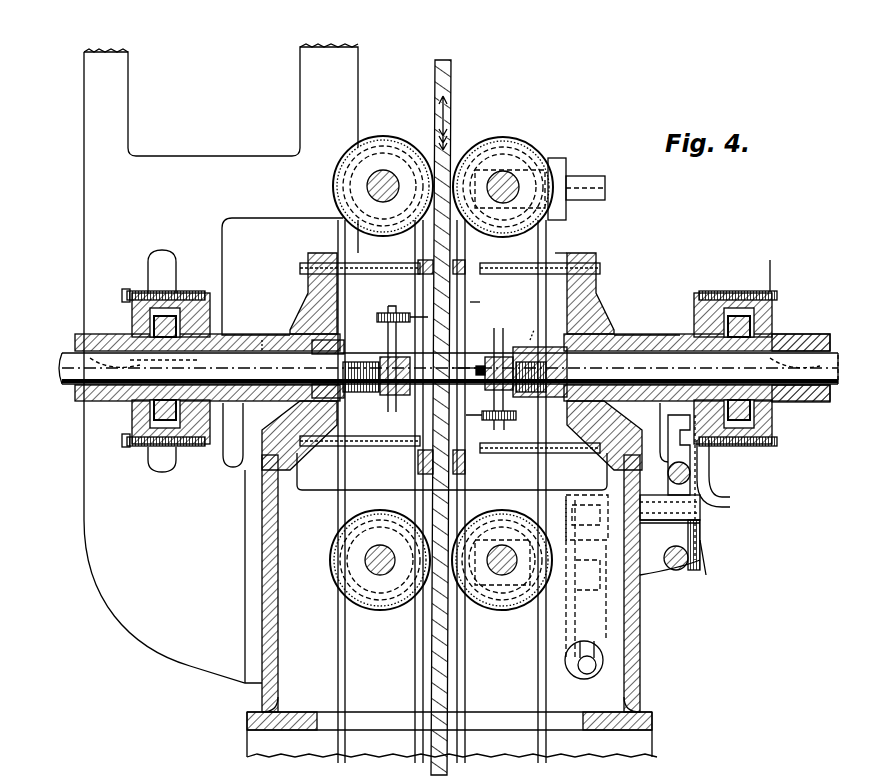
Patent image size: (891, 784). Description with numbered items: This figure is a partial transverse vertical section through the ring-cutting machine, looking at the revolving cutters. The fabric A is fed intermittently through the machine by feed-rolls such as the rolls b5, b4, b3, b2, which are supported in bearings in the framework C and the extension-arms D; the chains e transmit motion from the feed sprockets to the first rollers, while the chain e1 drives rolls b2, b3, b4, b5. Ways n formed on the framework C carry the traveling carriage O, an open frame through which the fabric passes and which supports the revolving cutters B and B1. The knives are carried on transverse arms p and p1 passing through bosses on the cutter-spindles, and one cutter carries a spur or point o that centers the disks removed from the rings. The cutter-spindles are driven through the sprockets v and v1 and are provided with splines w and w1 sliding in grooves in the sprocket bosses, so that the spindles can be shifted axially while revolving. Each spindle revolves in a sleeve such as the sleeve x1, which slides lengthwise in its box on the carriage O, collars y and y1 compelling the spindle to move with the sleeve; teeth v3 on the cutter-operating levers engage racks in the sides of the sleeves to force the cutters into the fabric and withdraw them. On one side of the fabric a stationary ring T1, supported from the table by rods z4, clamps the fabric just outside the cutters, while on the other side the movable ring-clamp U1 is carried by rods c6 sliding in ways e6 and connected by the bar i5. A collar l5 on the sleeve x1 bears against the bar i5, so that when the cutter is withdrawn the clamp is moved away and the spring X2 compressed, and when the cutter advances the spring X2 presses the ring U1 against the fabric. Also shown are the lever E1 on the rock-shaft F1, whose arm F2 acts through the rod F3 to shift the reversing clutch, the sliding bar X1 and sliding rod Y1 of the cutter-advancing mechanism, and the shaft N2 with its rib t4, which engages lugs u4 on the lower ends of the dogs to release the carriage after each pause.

The fabric A is at (453, 78).
The extension-arm D is at (221, 363).
The framework C is at (447, 605).
The fabric-feeding roll b5 is at (393, 132).
The fabric-feeding roll b4 is at (509, 141).
The fabric-feeding roll b3 is at (378, 615).
The fabric-feeding roll b2 is at (510, 615).
The chain e is at (442, 491).
The spline w1 is at (80, 352).
The spline w is at (812, 352).
The sleeve x1 is at (660, 314).
The traveling carriage O is at (300, 312).
The sprocket v1 is at (160, 325).
The sprocket v is at (745, 328).
The collar y1 is at (208, 430).
The collar y is at (710, 292).
The teeth v3 is at (650, 278).
The ways n is at (445, 436).
The stationary ring T1 is at (422, 264).
The rods z4 is at (368, 258).
The rods c6 is at (482, 263).
The ways e6 is at (516, 263).
The chain e1 is at (345, 462).
The spring X2 is at (564, 240).
The revolving cutter B1 is at (410, 312).
The transverse arm p1 is at (388, 408).
The revolving cutter B is at (491, 411).
The transverse arm p is at (498, 326).
The spur or point o is at (482, 368).
The collar l5 is at (439, 351).
The bar i5 is at (531, 309).
The movable ring-clamp U1 is at (488, 297).
The lever E1 is at (712, 466).
The sliding bar X1 is at (728, 480).
The sliding rod Y1 is at (714, 512).
The rib t4 is at (700, 535).
The lugs u4 is at (710, 560).
The shaft N2 is at (676, 570).
The rock-shaft F1 is at (604, 528).
The arm F2 is at (600, 565).
The rod F3 is at (577, 678).